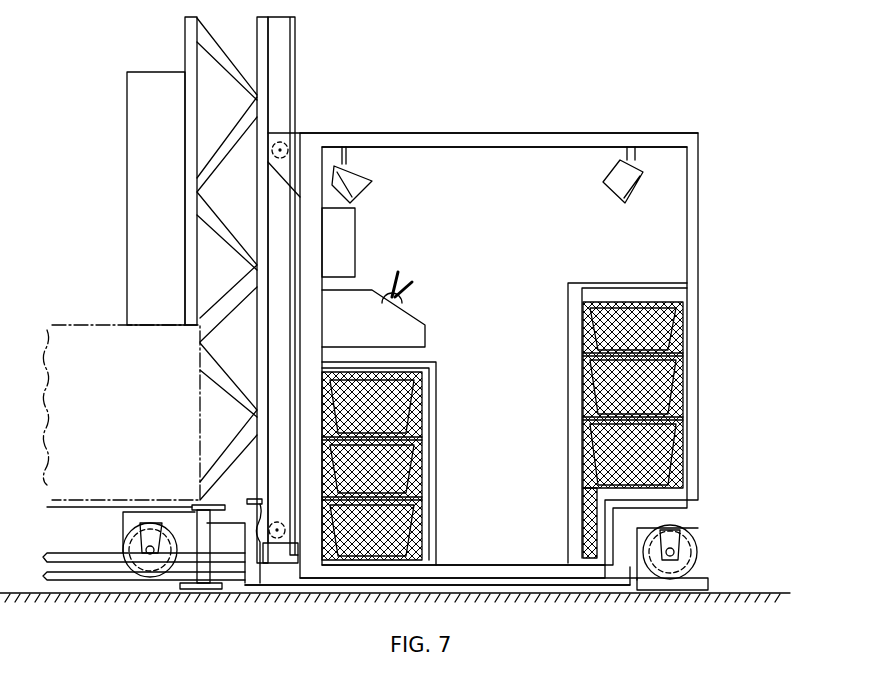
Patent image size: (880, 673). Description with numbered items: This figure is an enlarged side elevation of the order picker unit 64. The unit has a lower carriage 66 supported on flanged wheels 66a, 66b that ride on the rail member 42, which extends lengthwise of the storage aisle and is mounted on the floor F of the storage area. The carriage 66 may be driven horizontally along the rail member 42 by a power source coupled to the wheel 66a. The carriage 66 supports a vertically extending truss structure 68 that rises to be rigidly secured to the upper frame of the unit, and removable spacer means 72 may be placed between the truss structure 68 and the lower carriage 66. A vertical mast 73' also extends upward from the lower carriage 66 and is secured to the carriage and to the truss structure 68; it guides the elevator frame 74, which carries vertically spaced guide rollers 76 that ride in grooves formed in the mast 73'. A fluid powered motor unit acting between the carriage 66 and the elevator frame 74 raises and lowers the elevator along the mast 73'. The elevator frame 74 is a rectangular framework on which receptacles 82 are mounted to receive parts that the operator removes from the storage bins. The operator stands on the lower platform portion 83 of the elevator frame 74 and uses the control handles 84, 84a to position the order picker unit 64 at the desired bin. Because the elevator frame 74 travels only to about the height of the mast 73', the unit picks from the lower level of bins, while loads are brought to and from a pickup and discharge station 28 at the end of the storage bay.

The pickup and discharge station 28 is at (98, 557).
The rail member 42 is at (709, 590).
The order picker unit 64 is at (742, 246).
The lower carriage 66 is at (628, 586).
The flanged wheel 66a is at (160, 574).
The flanged wheel 66b is at (698, 553).
The truss structure 68 is at (185, 45).
The removable spacer means 72 is at (245, 584).
The vertical mast 73' is at (309, 286).
The elevator frame 74 is at (514, 133).
The guide rollers 76 is at (287, 143).
The receptacles 82 is at (397, 528).
The lower platform portion 83 is at (476, 564).
The control handle 84 is at (392, 286).
The control handle 84a is at (414, 290).
The floor F is at (777, 593).